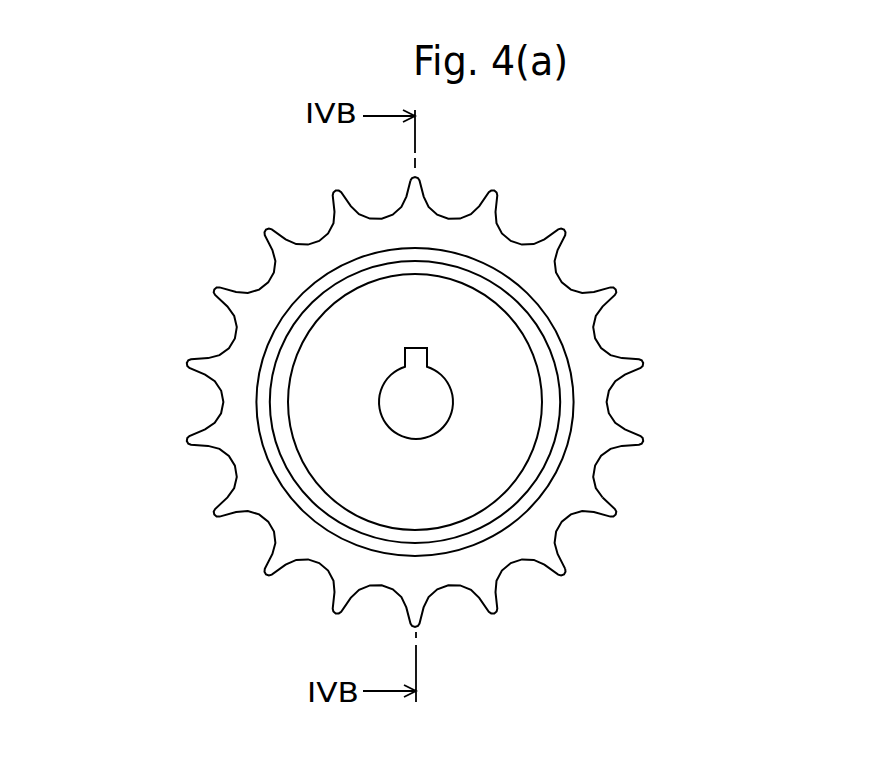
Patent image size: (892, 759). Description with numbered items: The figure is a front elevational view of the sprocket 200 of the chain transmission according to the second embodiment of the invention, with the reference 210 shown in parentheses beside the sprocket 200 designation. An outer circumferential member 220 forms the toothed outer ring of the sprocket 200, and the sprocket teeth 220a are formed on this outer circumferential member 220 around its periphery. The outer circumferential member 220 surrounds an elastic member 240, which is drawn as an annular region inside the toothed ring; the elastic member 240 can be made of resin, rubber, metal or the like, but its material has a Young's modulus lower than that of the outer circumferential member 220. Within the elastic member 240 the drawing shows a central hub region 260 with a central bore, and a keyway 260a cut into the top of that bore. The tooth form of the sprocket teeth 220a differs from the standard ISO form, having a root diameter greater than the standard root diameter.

The sprocket 200 is at (415, 407).
The sprocket body 210 is at (450, 407).
The outer circumferential member 220 is at (587, 458).
The sprocket teeth 220a is at (605, 506).
The elastic member 240 is at (567, 405).
The hub 260 is at (482, 330).
The keyway 260a is at (447, 386).